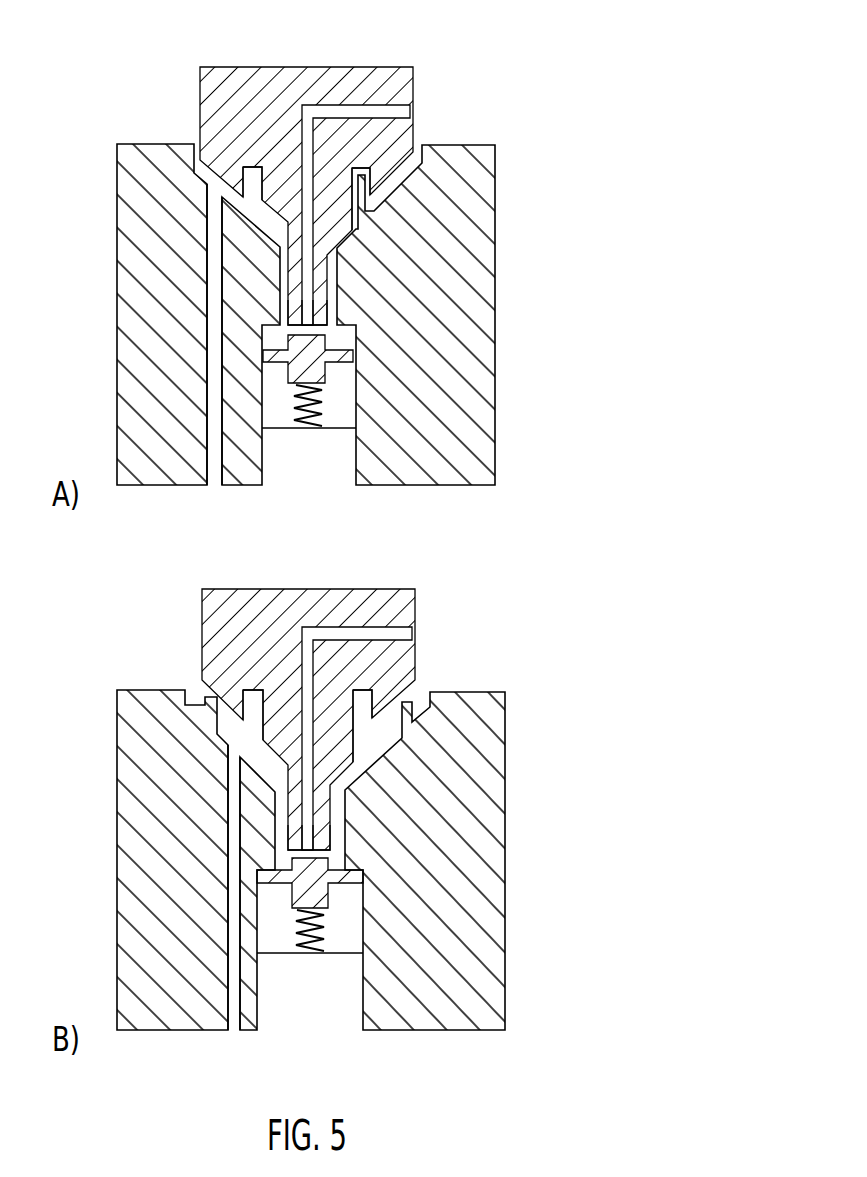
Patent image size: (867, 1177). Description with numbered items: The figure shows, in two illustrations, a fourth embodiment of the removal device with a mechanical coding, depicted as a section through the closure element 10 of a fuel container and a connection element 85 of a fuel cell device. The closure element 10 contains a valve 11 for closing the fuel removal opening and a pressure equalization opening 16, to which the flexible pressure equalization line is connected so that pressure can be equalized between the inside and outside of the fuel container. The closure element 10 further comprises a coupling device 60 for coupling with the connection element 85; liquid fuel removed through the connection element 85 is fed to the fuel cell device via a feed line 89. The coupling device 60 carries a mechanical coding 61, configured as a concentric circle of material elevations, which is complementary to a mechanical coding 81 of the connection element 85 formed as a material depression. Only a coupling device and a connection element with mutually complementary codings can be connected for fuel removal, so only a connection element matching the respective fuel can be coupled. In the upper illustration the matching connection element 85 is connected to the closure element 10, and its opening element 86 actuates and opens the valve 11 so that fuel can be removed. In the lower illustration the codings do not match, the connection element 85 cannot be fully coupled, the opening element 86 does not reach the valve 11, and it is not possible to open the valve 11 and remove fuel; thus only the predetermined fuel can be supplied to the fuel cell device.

The closure element 10 is at (493, 263).
The valve 11 is at (318, 368).
The pressure equalization opening 16 is at (207, 294).
The coupling device 60 is at (438, 130).
The mechanical coding of the coupling device 61 is at (367, 203).
The mechanical coding of the connection element 81 is at (246, 167).
The connection element 85 is at (383, 73).
The opening element 86 is at (327, 283).
The feed line 89 is at (343, 106).